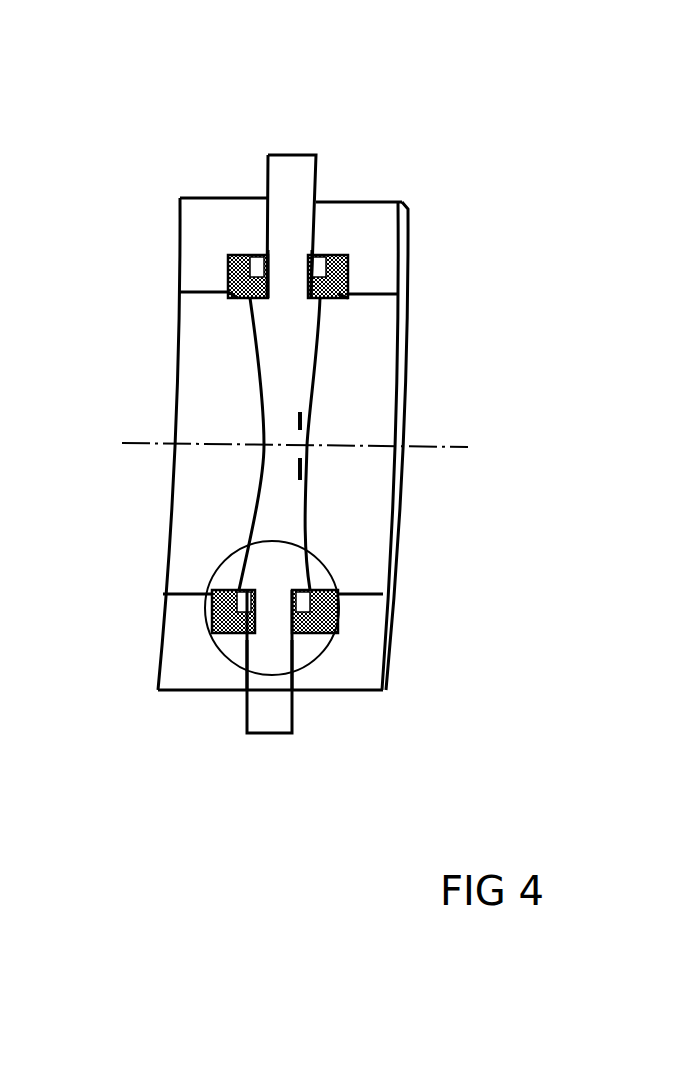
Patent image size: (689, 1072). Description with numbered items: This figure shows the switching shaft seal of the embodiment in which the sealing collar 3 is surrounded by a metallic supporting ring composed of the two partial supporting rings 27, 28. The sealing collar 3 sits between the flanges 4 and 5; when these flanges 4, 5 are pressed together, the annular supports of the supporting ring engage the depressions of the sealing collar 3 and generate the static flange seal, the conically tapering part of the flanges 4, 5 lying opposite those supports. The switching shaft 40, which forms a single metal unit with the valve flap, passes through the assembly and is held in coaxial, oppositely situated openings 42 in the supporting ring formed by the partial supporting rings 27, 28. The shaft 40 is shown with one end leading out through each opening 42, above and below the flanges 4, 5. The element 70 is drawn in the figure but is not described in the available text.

The sealing collar 3 is at (238, 297).
The flange 4 is at (215, 227).
The flange 5 is at (375, 225).
The partial supporting ring 27 is at (257, 267).
The partial supporting ring 28 is at (318, 258).
The switching shaft 40 is at (293, 182).
The opening 42 is at (285, 270).
The flexural element 70 is at (272, 503).